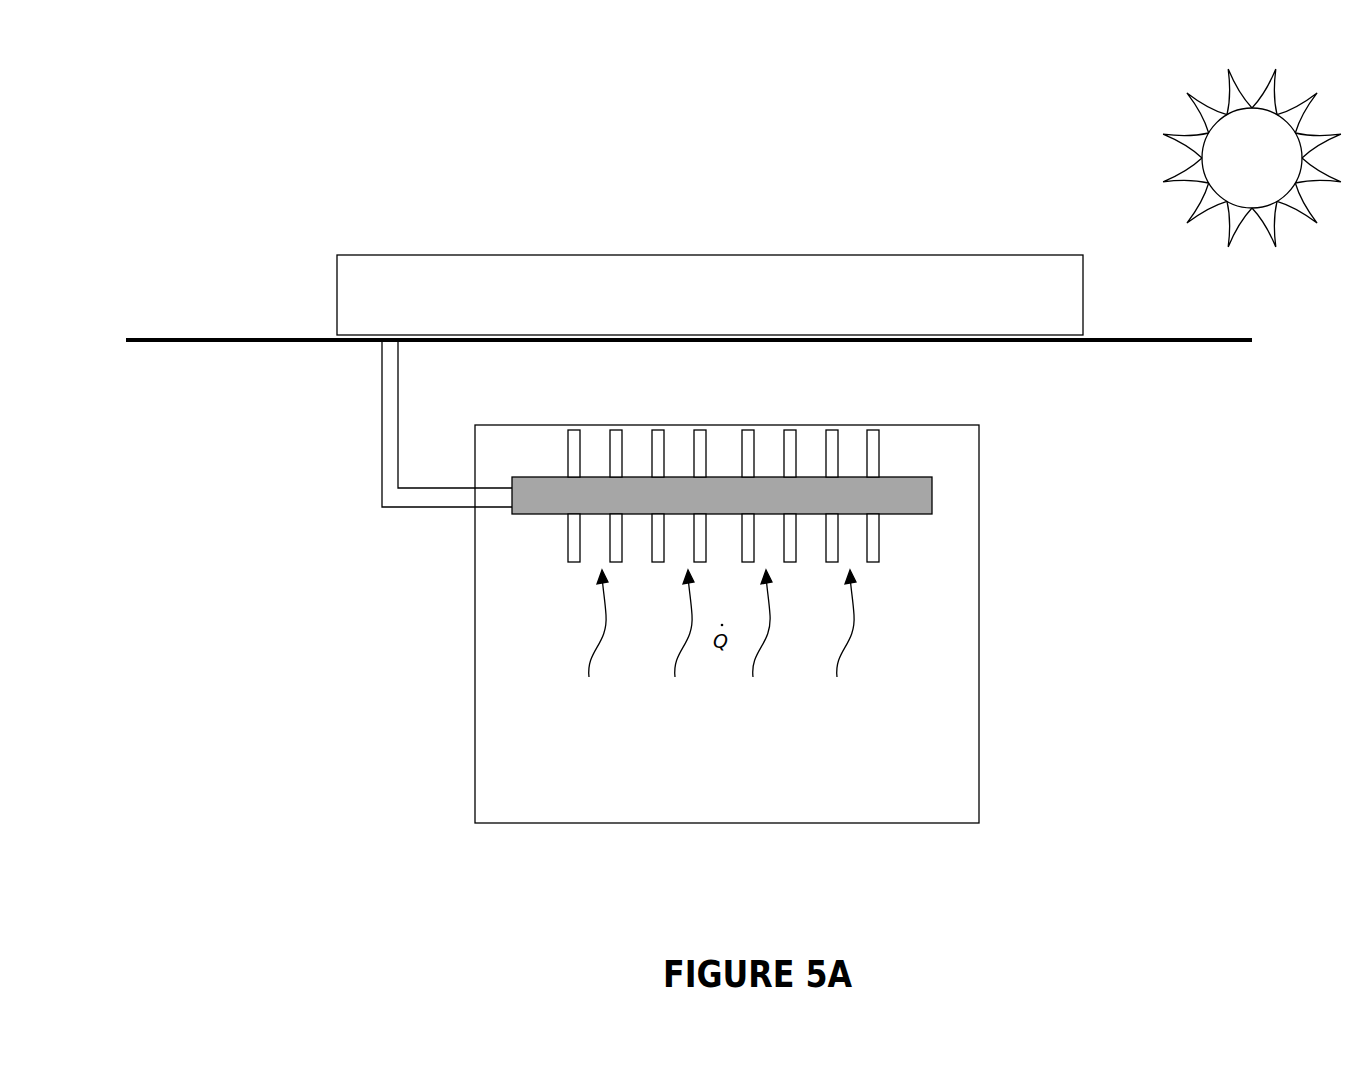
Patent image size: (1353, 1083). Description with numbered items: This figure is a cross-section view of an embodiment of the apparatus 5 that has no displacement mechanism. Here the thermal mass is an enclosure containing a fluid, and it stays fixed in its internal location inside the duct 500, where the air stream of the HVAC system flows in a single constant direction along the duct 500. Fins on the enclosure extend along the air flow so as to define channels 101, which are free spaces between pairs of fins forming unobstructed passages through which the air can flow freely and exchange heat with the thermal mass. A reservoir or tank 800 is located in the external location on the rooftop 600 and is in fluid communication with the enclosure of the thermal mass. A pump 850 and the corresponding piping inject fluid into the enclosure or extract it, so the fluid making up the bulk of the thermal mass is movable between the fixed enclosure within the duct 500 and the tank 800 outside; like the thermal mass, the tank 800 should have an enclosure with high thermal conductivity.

The apparatus 5 is at (953, 512).
The channels 101 is at (595, 527).
The duct 500 is at (478, 685).
The rooftop 600 is at (1190, 333).
The tank 800 is at (347, 290).
The pump 850 is at (382, 473).